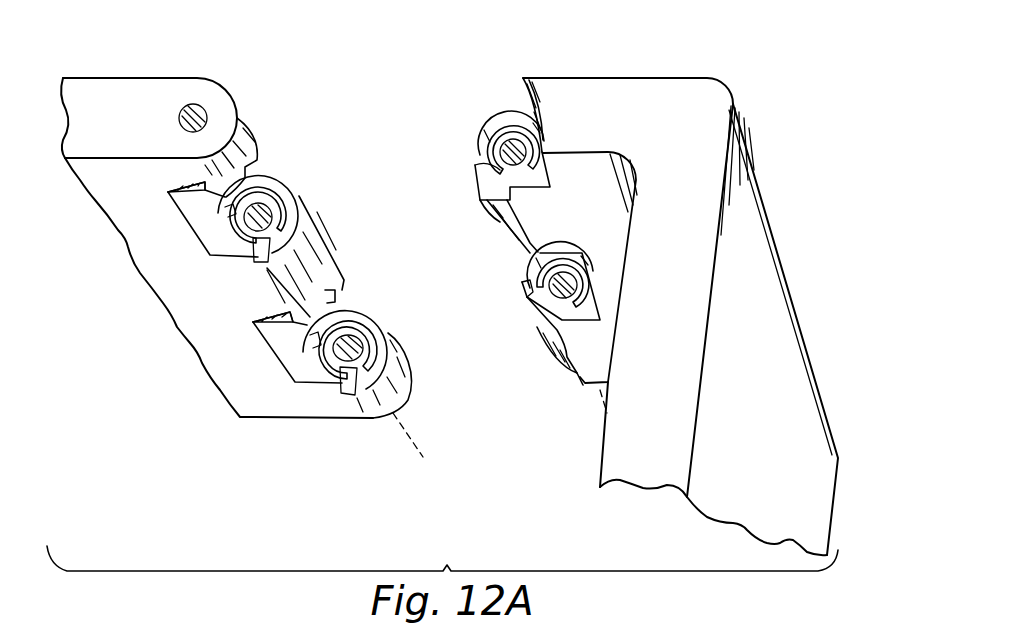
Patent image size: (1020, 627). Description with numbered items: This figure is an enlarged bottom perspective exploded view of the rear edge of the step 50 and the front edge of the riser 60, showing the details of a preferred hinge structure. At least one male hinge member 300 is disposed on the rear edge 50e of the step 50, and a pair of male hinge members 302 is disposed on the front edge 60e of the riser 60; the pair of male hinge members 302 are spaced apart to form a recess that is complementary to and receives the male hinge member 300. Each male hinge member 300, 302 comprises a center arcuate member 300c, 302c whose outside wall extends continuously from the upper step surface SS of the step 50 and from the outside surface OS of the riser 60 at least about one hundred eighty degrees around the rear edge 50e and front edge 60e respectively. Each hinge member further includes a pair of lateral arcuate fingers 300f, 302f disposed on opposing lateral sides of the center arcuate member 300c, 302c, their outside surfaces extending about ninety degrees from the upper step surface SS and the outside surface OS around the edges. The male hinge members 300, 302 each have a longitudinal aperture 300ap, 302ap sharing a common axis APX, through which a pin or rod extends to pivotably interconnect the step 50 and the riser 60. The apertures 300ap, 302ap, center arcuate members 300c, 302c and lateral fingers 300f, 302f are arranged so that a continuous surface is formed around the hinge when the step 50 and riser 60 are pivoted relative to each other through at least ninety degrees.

The step 50 is at (111, 74).
The upper step surface SS is at (177, 77).
The axis APX is at (184, 104).
The rear edge of the step 50e is at (213, 77).
The male hinge member 300 is at (243, 91).
The longitudinal aperture 300ap is at (271, 206).
The center arcuate member 300c is at (323, 210).
The lateral arcuate fingers 300f is at (295, 190).
The riser 60 is at (675, 71).
The outside surface of the riser OS is at (638, 77).
The front edge of the riser 60e is at (523, 78).
The male hinge members 302 is at (481, 207).
The longitudinal aperture 302ap is at (507, 150).
The lateral arcuate fingers 302f is at (490, 147).
The center arcuate member 302c is at (482, 193).